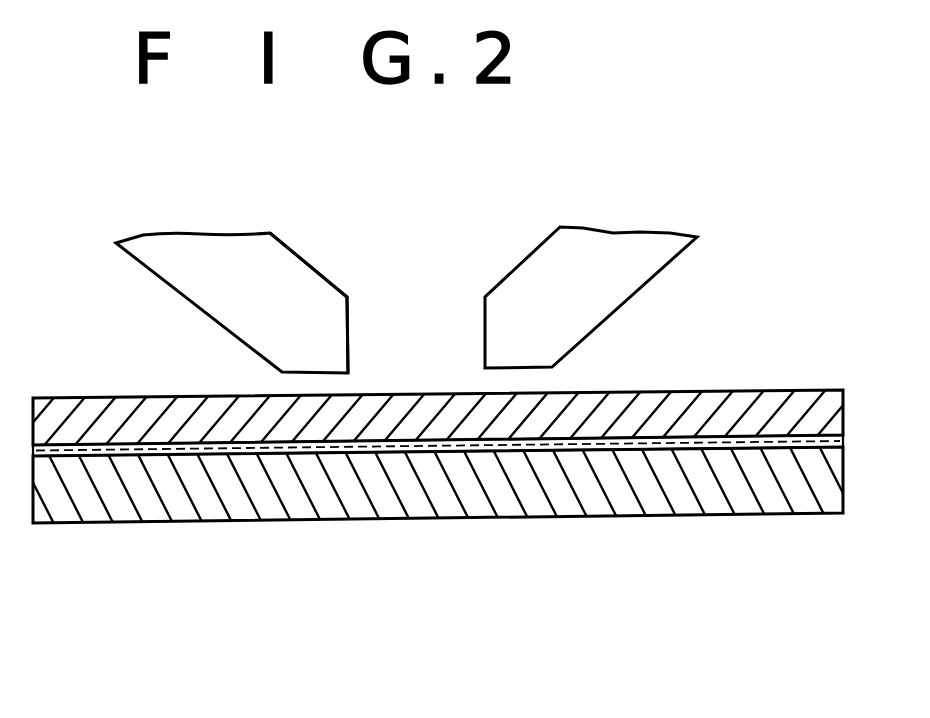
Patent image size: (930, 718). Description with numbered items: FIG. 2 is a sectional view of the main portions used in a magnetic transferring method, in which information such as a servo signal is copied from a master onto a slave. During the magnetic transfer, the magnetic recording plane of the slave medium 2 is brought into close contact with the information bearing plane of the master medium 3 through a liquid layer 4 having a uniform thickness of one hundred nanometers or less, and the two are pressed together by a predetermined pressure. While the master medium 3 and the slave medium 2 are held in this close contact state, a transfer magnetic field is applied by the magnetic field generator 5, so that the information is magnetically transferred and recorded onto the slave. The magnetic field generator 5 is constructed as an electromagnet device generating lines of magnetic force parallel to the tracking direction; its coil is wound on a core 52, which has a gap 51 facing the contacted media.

The slave medium 2 is at (667, 397).
The master medium 3 is at (563, 502).
The liquid layer 4 is at (378, 450).
The magnetic field generator 5 is at (156, 279).
The gap 51 is at (348, 317).
The core 52 is at (523, 283).